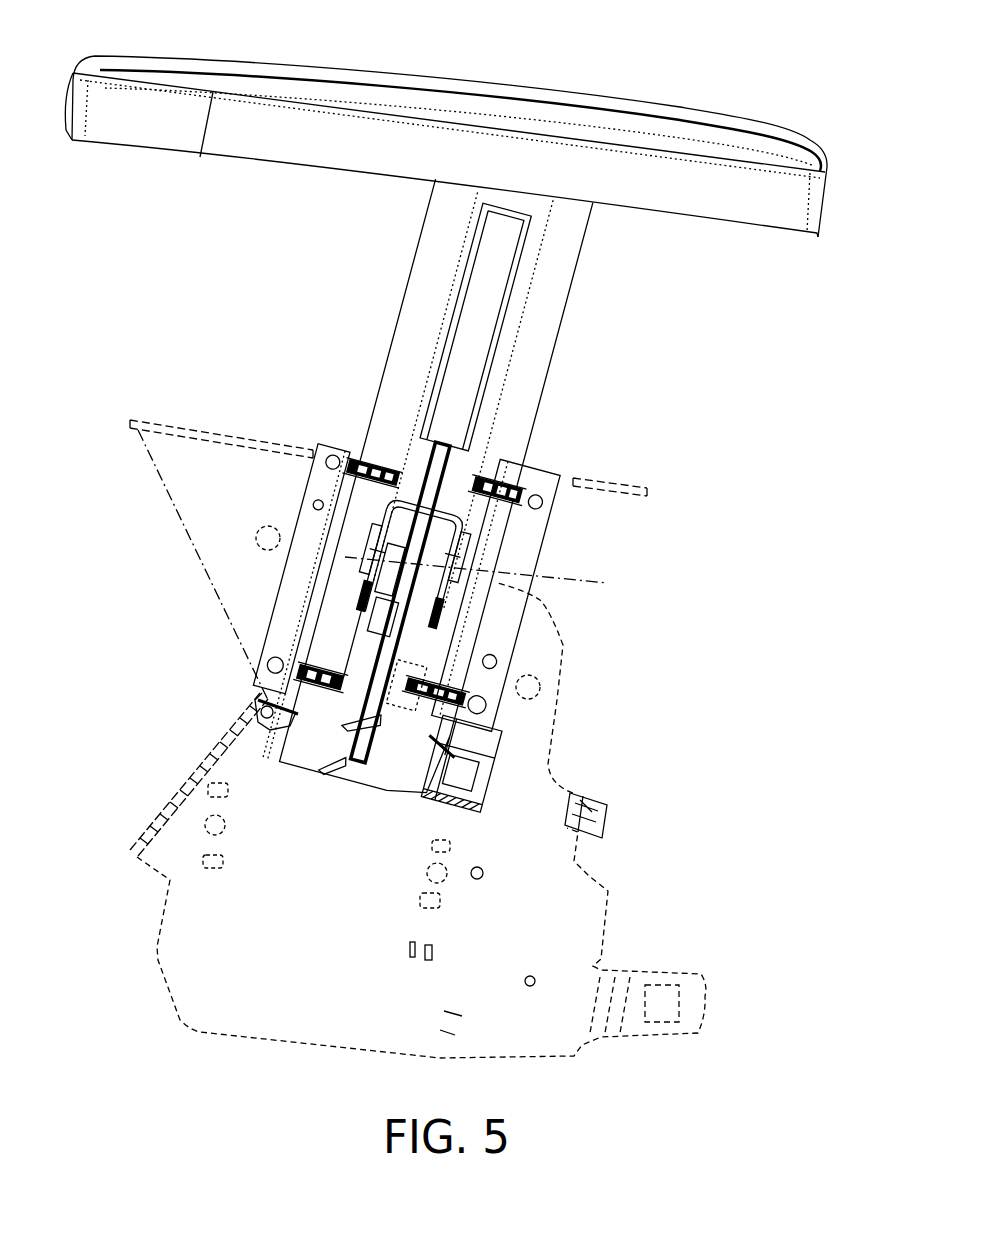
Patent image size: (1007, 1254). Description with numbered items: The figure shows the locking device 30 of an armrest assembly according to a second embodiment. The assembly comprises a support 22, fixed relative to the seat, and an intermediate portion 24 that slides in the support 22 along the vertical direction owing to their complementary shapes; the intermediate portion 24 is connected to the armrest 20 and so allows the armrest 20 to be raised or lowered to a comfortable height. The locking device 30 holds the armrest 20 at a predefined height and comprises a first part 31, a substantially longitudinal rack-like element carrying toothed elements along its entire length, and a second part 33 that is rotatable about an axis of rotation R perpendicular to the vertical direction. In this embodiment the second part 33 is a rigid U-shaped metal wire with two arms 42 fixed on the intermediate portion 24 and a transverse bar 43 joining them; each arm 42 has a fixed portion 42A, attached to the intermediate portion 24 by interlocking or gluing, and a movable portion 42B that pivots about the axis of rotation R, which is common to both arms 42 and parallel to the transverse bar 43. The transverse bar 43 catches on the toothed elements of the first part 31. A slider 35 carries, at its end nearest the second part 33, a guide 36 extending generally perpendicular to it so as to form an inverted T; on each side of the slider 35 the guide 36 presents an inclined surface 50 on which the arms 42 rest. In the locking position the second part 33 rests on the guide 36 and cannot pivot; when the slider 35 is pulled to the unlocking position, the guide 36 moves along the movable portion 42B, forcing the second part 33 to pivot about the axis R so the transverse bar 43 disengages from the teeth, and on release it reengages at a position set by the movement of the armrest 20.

The armrest 20 is at (770, 116).
The support 22 is at (540, 715).
The intermediate portion 24 is at (413, 338).
The locking device 30 is at (390, 470).
The first part 31 is at (272, 643).
The second part 33 is at (467, 535).
The slider 35 is at (478, 327).
The guide 36 is at (405, 540).
The arms 42 is at (365, 592).
The fixed portion 42A is at (370, 590).
The movable portion 42B is at (317, 457).
The transverse bar 43 is at (518, 483).
The surface 50 is at (400, 548).
The axis of rotation R is at (383, 565).